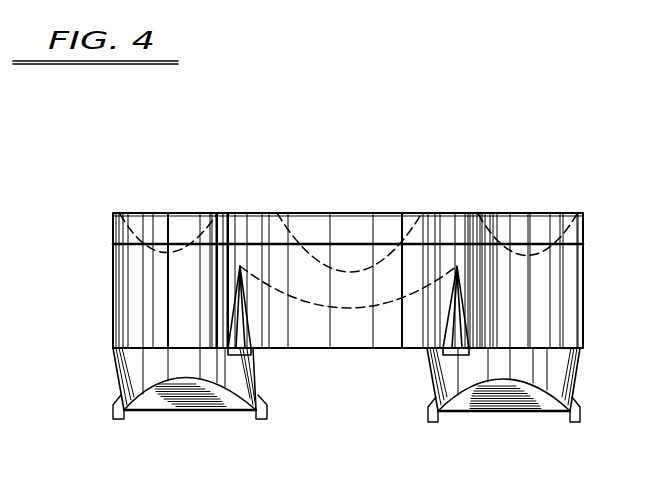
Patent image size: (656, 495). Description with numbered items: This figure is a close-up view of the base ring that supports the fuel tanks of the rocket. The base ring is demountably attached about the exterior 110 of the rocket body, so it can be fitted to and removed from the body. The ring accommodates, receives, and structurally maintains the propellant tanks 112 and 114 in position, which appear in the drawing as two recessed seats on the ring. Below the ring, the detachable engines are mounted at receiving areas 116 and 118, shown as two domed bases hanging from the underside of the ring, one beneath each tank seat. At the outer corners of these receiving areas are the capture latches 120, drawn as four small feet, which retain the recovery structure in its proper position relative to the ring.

The exterior 110 is at (480, 214).
The propellant tank 112 is at (164, 233).
The propellant tank 114 is at (513, 231).
The receiving area 116 is at (195, 408).
The receiving area 118 is at (501, 411).
The capture latch 120 is at (110, 420).